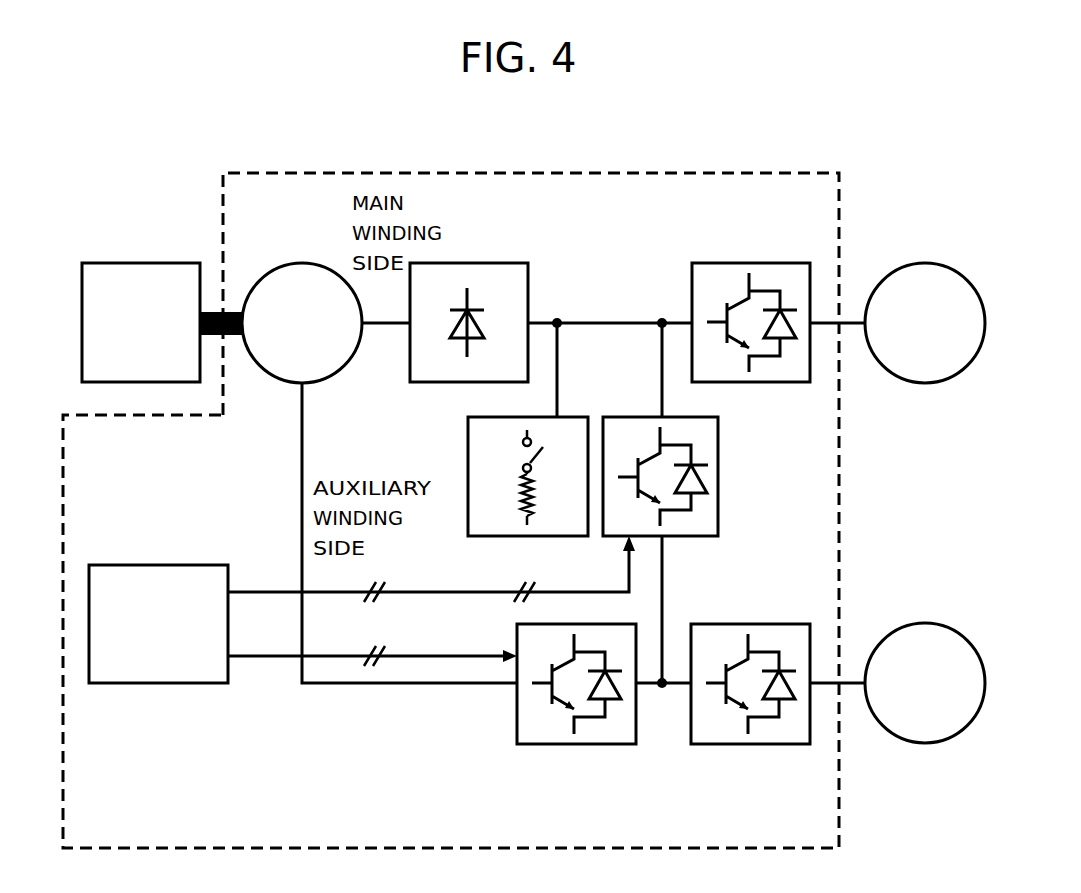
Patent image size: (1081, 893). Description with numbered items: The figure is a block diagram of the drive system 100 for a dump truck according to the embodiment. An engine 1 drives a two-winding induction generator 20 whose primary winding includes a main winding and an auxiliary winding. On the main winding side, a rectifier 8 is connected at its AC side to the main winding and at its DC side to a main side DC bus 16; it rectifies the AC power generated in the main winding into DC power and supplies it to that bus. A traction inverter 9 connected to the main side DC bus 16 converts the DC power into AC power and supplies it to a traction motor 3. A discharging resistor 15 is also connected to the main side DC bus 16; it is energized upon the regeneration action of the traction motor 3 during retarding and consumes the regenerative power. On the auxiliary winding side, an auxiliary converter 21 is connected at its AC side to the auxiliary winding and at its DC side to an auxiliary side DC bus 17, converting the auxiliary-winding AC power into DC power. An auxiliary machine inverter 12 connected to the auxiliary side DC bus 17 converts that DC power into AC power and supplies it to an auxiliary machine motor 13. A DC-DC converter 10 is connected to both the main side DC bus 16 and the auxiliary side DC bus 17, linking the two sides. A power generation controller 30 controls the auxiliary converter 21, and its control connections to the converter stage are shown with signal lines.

The engine 1 is at (145, 263).
The two-winding induction generator 20 is at (298, 260).
The rectifier 8 is at (483, 263).
The main side DC bus 16 is at (610, 323).
The traction inverter 9 is at (740, 263).
The traction motor 3 is at (943, 263).
The drive system 100 is at (652, 172).
The discharging resistor 15 is at (468, 441).
The DC-DC converter 10 is at (718, 477).
The auxiliary side DC bus 17 is at (662, 575).
The power generation controller 30 is at (160, 565).
The auxiliary converter 21 is at (568, 744).
The auxiliary machine inverter 12 is at (757, 744).
The auxiliary machine motor 13 is at (968, 727).